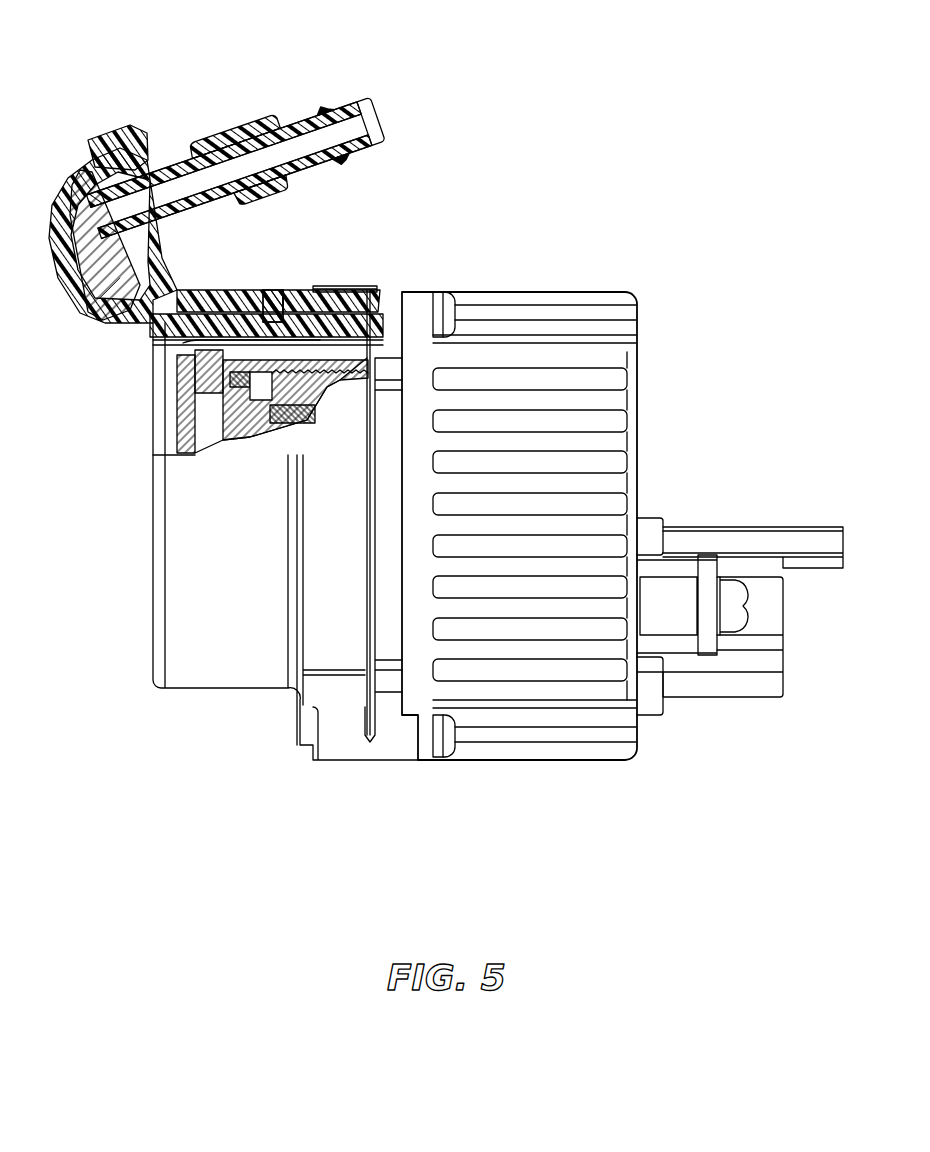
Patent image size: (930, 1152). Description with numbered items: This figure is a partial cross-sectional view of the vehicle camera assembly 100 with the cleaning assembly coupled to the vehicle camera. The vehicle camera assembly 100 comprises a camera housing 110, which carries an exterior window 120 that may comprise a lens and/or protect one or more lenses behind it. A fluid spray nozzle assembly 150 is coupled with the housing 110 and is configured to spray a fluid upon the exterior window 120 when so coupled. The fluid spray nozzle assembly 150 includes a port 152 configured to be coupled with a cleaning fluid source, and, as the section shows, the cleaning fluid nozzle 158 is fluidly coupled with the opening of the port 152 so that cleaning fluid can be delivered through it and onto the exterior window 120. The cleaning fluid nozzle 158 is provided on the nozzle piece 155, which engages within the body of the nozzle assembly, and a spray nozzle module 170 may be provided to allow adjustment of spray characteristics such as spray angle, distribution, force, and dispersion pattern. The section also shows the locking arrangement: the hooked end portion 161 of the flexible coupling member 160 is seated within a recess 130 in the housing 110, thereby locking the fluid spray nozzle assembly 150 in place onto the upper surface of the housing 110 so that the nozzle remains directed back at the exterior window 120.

The vehicle camera assembly 100 is at (670, 240).
The camera housing 110 is at (555, 380).
The exterior window 120 is at (183, 417).
The recess 130 is at (325, 322).
The fluid spray nozzle assembly 150 is at (172, 106).
The port 152 is at (385, 57).
The nozzle piece 155 is at (53, 210).
The cleaning fluid nozzle 158 is at (118, 320).
The flexible coupling member 160 is at (235, 297).
The hooked end portion 161 is at (283, 298).
The spray nozzle module 170 is at (97, 276).